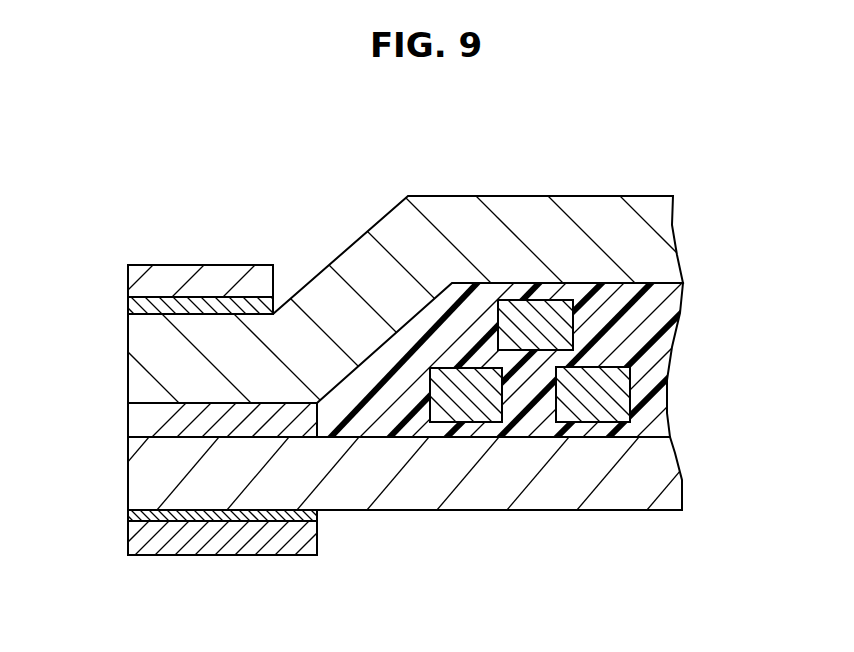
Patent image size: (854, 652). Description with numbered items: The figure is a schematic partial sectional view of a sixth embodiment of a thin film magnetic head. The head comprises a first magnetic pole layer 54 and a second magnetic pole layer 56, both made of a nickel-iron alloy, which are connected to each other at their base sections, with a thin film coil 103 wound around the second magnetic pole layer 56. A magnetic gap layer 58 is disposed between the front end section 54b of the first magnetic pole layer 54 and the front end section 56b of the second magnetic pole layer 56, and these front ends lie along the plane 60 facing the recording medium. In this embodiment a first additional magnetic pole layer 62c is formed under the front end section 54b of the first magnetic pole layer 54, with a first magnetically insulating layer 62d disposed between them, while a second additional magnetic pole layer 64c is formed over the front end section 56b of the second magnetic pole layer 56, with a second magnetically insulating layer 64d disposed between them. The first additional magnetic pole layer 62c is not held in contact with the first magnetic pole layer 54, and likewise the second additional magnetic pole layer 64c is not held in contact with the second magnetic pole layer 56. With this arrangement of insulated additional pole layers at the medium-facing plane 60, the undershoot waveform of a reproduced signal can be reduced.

The first magnetic pole layer 54 is at (380, 500).
The front end section of the first magnetic pole layer 54b is at (133, 476).
The second magnetic pole layer 56 is at (578, 212).
The front end section of the second magnetic pole layer 56b is at (133, 341).
The magnetic gap layer 58 is at (133, 425).
The plane facing the recording medium 60 is at (129, 250).
The first additional magnetic pole layer 62c is at (153, 557).
The first magnetically insulating layer 62d is at (133, 515).
The second additional magnetic pole layer 64c is at (133, 279).
The second magnetically insulating layer 64d is at (133, 306).
The thin film coil 103 is at (618, 393).